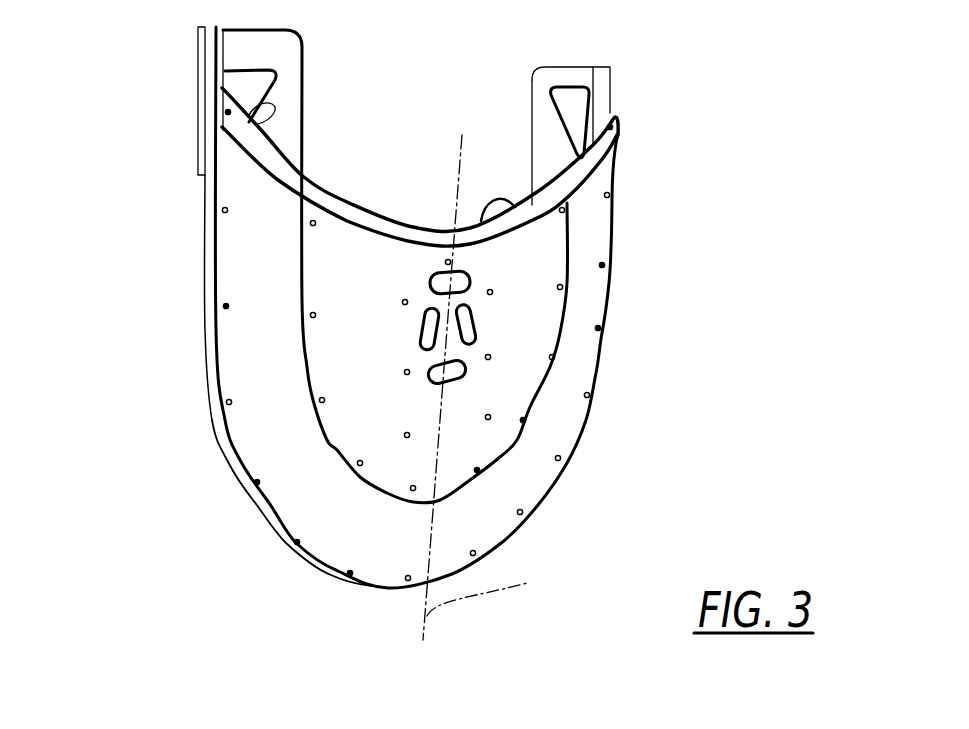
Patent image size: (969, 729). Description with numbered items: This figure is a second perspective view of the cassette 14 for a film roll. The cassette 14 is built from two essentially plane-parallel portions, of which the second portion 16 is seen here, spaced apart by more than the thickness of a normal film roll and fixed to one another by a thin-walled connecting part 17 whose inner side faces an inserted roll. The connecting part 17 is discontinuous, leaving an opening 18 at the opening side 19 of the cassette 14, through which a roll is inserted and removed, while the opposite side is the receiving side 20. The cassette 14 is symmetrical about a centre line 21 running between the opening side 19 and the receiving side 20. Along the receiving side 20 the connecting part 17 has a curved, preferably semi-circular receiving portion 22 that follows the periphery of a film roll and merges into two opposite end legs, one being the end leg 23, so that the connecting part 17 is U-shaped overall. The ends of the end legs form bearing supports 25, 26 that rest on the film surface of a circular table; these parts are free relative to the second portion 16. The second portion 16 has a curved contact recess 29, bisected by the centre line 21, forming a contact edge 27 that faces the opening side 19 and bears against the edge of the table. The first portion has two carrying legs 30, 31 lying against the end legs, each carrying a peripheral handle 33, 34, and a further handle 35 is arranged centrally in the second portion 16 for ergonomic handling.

The cassette 14 is at (431, 307).
The second portion 16 is at (547, 452).
The connecting part 17 is at (212, 332).
The opening 18 is at (484, 142).
The opening side 19 is at (429, 102).
The receiving side 20 is at (402, 603).
The centre line 21 is at (496, 594).
The receiving portion 22 is at (262, 510).
The end leg 23 is at (203, 200).
The bearing support 25 is at (210, 29).
The bearing support 26 is at (603, 88).
The contact edge 27 is at (492, 203).
The contact recess 29 is at (423, 195).
The carrying leg 30 is at (248, 117).
The carrying leg 31 is at (540, 117).
The handle 33 is at (247, 80).
The handle 34 is at (567, 107).
The handle 35 is at (428, 349).